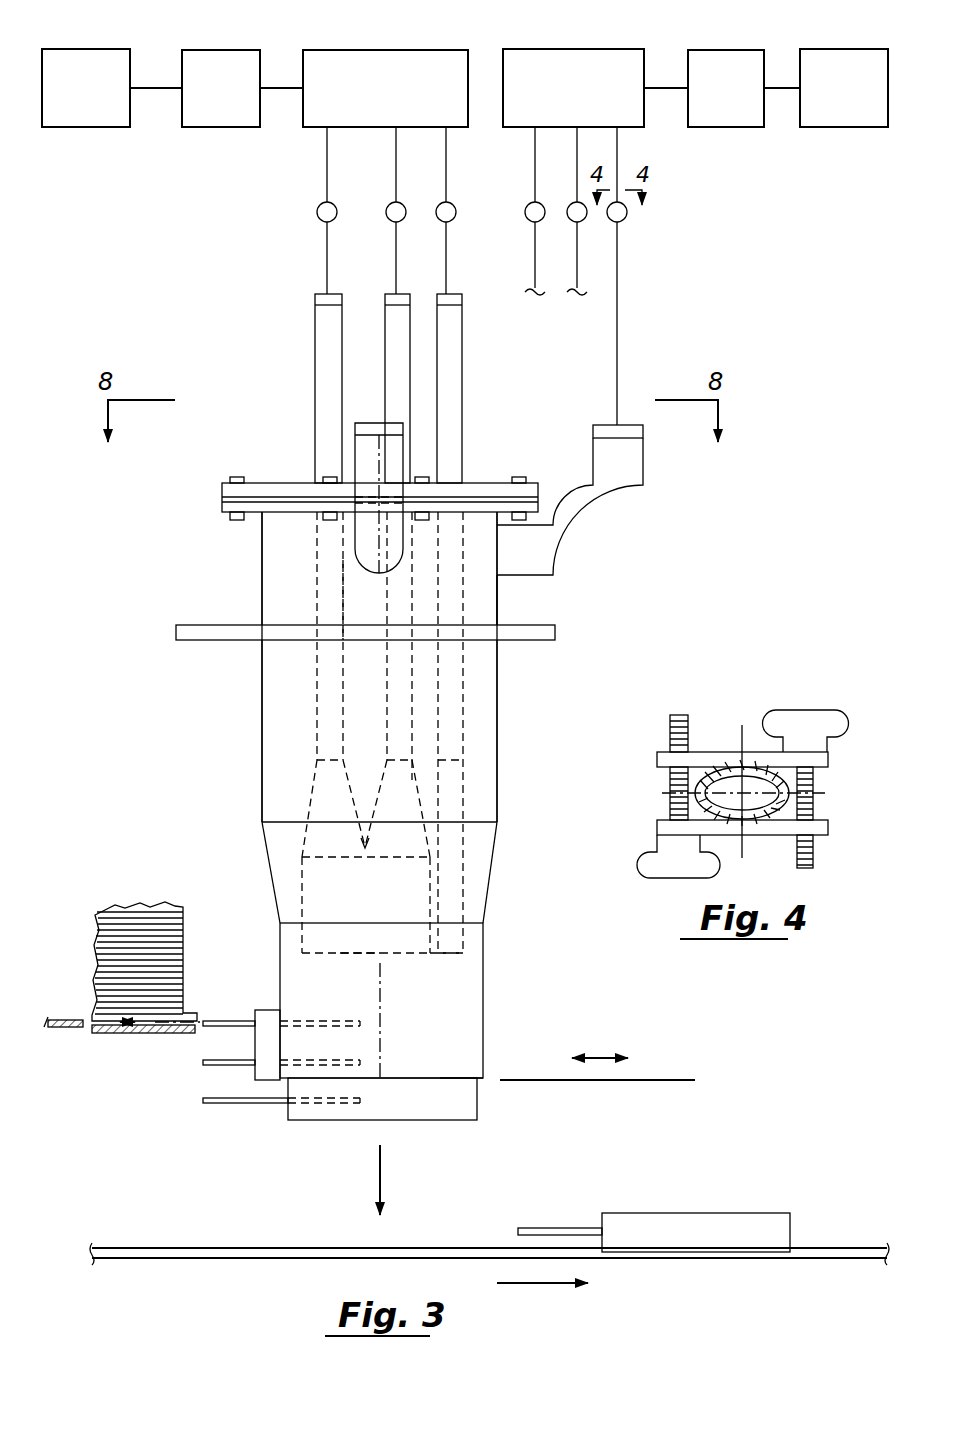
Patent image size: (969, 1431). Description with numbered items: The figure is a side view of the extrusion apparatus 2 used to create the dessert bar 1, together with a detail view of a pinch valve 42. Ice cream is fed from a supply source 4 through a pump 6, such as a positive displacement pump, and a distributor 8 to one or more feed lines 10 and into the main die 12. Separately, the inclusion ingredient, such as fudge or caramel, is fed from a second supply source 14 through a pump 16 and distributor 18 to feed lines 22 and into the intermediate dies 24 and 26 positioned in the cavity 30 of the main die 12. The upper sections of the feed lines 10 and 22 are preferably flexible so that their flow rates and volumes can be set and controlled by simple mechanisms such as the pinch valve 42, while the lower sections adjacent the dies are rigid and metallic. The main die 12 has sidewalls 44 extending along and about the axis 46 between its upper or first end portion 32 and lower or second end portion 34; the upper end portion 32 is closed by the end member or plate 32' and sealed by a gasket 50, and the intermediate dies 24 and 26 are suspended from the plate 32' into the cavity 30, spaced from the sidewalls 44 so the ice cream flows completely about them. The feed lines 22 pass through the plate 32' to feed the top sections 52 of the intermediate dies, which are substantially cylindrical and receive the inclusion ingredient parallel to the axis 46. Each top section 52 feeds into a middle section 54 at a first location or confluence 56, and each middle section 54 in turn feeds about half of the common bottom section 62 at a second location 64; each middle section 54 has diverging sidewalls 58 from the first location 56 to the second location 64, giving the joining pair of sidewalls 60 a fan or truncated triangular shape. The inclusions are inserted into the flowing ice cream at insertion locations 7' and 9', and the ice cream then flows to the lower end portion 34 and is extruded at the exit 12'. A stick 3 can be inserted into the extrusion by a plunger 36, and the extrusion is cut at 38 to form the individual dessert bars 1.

In FIG. 3, the dessert bar 1 is at (443, 1120).
In FIG. 3, the apparatus 2 is at (183, 320).
In FIG. 3, the stick 3 is at (135, 940).
In FIG. 3, the supply source 4 is at (853, 49).
In FIG. 3, the pump 6 is at (737, 50).
In FIG. 3, the distributor 8 is at (573, 49).
In FIG. 3, the feed lines 10 is at (372, 423).
In FIG. 4, the feed lines 10 is at (685, 810).
In FIG. 3, the main die 12 is at (438, 816).
In FIG. 3, the exit 12' is at (492, 1046).
In FIG. 3, the second supply source 14 is at (103, 49).
In FIG. 3, the pump 16 is at (233, 50).
In FIG. 3, the distributor 18 is at (397, 50).
In FIG. 3, the feed lines 22 is at (327, 258).
In FIG. 3, the intermediate dies 24 is at (308, 548).
In FIG. 3, the intermediate die 26 is at (478, 603).
In FIG. 3, the cavity 30 is at (285, 680).
In FIG. 3, the upper or first end portion 32 is at (428, 474).
In FIG. 3, the end member or plate 32' is at (237, 469).
In FIG. 3, the lower or second end portion 34 is at (491, 993).
In FIG. 3, the plunger 36 is at (72, 1020).
In FIG. 3, the cut location 38 is at (660, 1080).
In FIG. 3, the pinch valve 42 is at (627, 218).
In FIG. 4, the pinch valve 42 is at (788, 684).
In FIG. 3, the sidewalls 44 is at (262, 713).
In FIG. 3, the axis 46 is at (382, 1052).
In FIG. 3, the gasket 50 is at (290, 497).
In FIG. 3, the top sections 52 is at (395, 603).
In FIG. 3, the middle section 54 is at (308, 778).
In FIG. 3, the first location or confluence 56 is at (317, 757).
In FIG. 3, the diverging sidewalls 58 is at (360, 790).
In FIG. 3, the joining pair of sidewalls 60 is at (400, 800).
In FIG. 3, the common bottom section 62 is at (388, 901).
In FIG. 3, the second location 64 is at (330, 857).
In FIG. 3, the insertion location 7' is at (350, 974).
In FIG. 3, the insertion location 9' is at (444, 974).